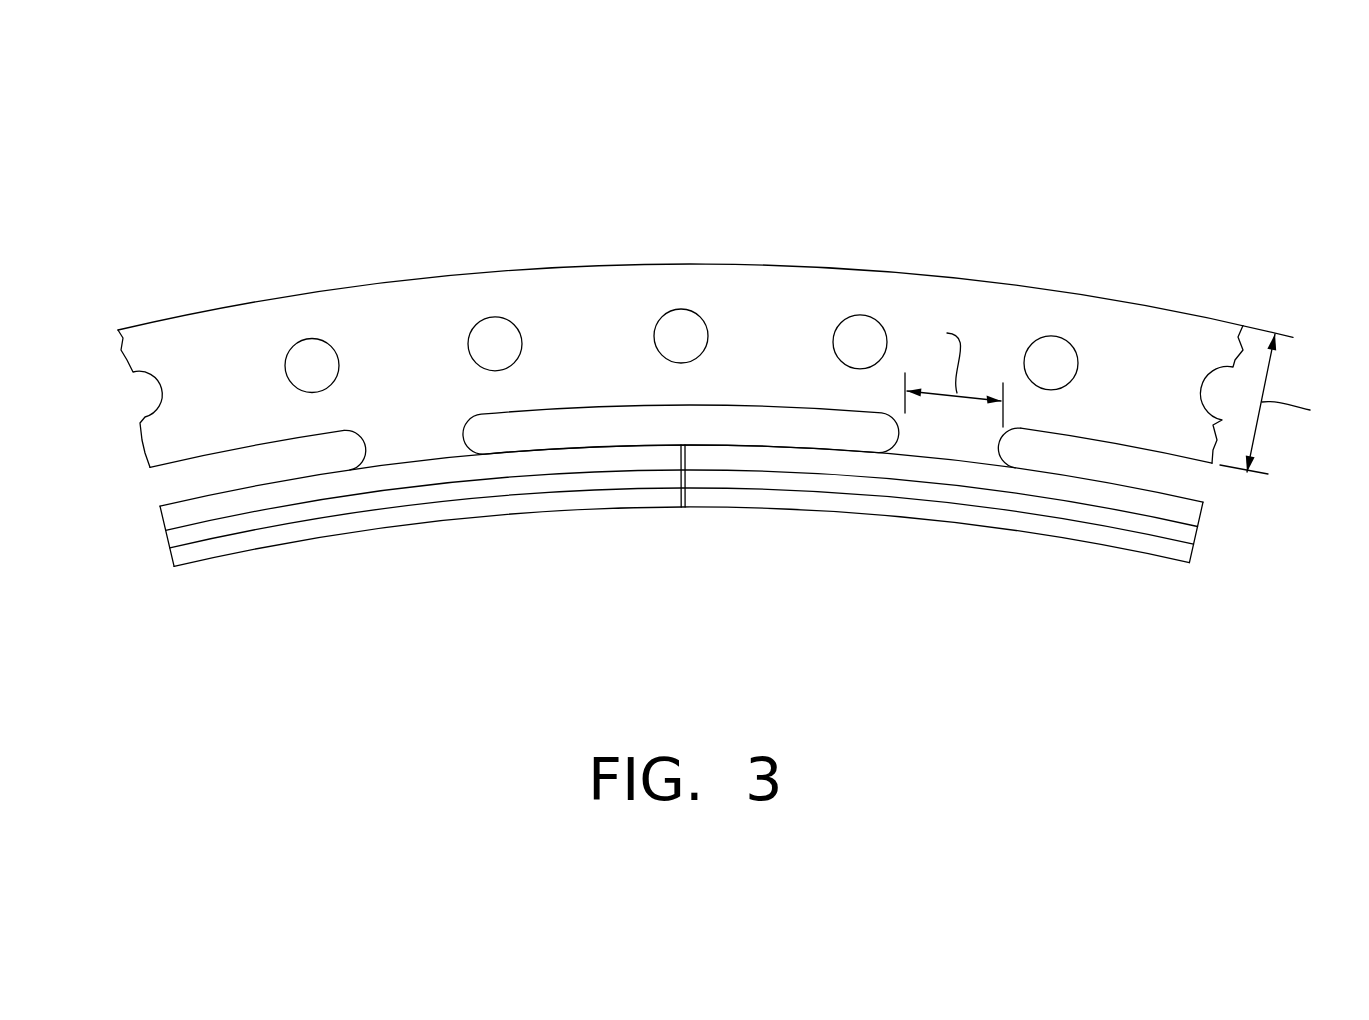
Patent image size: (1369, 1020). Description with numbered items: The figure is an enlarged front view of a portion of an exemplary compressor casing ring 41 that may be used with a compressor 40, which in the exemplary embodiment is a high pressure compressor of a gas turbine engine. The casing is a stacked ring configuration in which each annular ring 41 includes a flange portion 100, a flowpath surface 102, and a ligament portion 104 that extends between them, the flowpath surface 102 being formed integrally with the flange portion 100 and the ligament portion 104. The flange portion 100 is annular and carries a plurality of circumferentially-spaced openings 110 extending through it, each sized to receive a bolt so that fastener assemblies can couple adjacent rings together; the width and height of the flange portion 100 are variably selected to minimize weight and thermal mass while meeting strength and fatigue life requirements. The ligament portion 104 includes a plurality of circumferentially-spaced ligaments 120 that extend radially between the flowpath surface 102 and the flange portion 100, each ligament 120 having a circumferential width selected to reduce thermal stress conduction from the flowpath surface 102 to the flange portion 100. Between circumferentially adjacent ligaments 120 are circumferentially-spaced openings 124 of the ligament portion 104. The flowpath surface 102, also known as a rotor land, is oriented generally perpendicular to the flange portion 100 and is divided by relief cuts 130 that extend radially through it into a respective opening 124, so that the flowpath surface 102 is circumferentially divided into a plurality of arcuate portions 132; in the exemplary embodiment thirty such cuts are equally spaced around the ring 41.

The compressor 40 is at (253, 185).
The compressor casing ring 41 is at (932, 275).
The flange portion 100 is at (550, 298).
The flowpath surface 102 is at (835, 485).
The ligament portion 104 is at (940, 458).
The openings 110 is at (683, 318).
The ligaments 120 is at (476, 436).
The openings 124 is at (200, 483).
The relief cuts 130 is at (684, 512).
The arcuate portions 132 is at (425, 525).